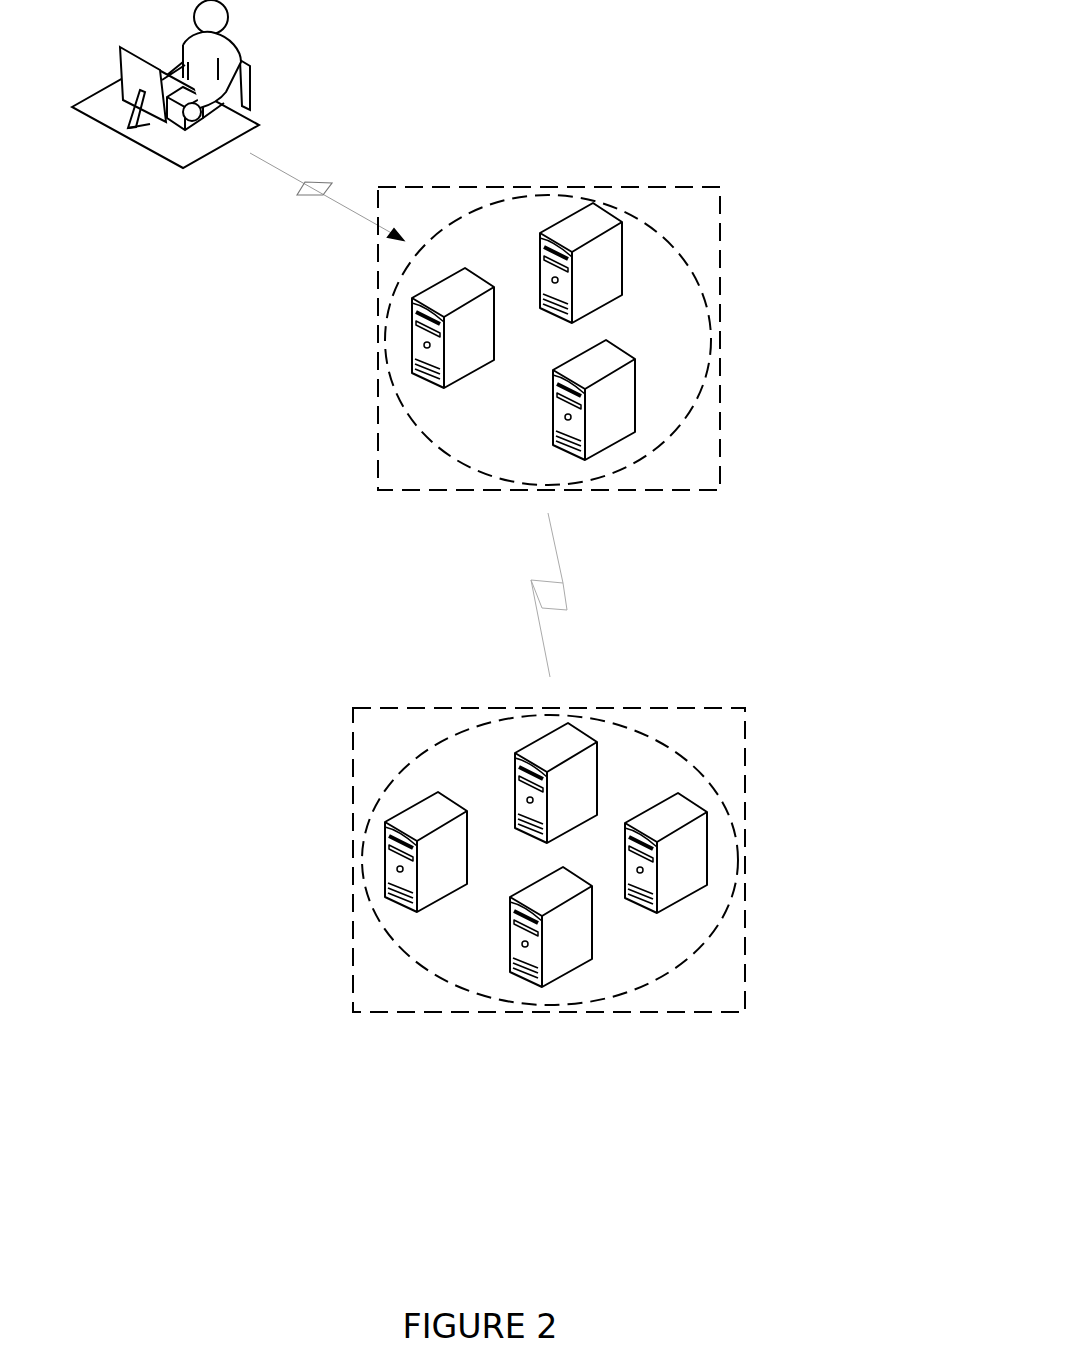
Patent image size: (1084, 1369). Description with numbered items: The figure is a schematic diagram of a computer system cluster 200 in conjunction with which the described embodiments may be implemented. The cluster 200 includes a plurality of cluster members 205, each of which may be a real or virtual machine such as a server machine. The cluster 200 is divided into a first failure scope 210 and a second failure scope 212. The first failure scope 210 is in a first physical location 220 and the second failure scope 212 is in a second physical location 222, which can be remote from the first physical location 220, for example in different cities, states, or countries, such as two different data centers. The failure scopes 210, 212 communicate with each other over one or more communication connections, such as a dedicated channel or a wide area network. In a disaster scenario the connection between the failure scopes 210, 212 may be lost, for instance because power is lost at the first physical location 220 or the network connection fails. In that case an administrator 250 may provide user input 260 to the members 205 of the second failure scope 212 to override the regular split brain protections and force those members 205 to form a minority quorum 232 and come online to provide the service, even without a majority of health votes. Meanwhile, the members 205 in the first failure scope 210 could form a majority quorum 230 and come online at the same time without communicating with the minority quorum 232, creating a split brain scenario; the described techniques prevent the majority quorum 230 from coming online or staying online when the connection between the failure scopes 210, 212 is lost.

The computer system cluster 200 is at (568, 648).
The cluster members 205 is at (645, 425).
The first failure scope 210 is at (353, 905).
The second failure scope 212 is at (378, 338).
The first physical location 220 is at (745, 783).
The second physical location 222 is at (720, 273).
The majority quorum 230 is at (643, 982).
The minority quorum 232 is at (592, 203).
The administrator 250 is at (212, 128).
The user input 260 is at (315, 181).